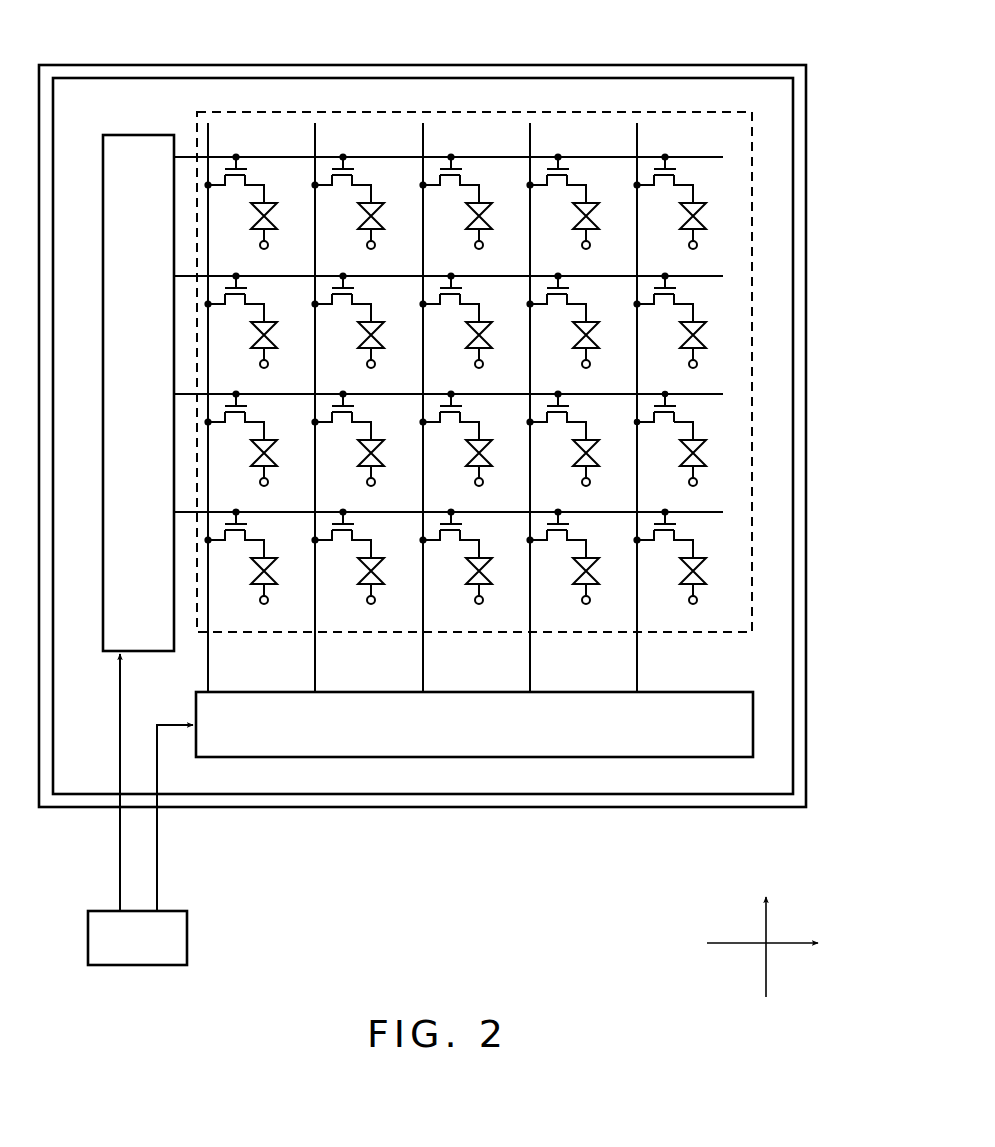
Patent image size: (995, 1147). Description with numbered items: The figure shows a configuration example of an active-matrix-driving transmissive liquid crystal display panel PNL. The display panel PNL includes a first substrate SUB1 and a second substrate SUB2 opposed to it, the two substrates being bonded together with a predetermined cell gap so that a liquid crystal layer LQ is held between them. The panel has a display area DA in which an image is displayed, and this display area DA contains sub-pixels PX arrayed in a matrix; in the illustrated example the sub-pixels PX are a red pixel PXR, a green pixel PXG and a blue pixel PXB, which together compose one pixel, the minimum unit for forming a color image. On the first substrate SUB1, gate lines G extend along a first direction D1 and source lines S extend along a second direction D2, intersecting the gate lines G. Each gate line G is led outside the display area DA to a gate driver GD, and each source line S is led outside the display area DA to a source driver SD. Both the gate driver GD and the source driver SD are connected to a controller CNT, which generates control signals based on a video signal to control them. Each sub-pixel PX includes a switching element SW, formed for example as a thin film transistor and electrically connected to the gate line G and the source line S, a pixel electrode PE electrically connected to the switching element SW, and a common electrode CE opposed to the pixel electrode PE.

The display panel PNL is at (422, 472).
The first substrate SUB1 is at (350, 807).
The second substrate SUB2 is at (462, 793).
The display area DA is at (752, 600).
The gate driver GD is at (138, 393).
The source driver SD is at (474, 724).
The controller CNT is at (140, 809).
The gate line G is at (697, 155).
The source line S is at (211, 142).
The red pixel PXR is at (284, 180).
The green pixel PXG is at (395, 180).
The blue pixel PXB is at (505, 180).
The sub-pixel PX is at (747, 449).
The switching element SW is at (663, 428).
The pixel electrode PE is at (692, 428).
The liquid crystal layer LQ is at (706, 458).
The common electrode CE is at (688, 484).
The first direction D1 is at (782, 943).
The second direction D2 is at (767, 930).